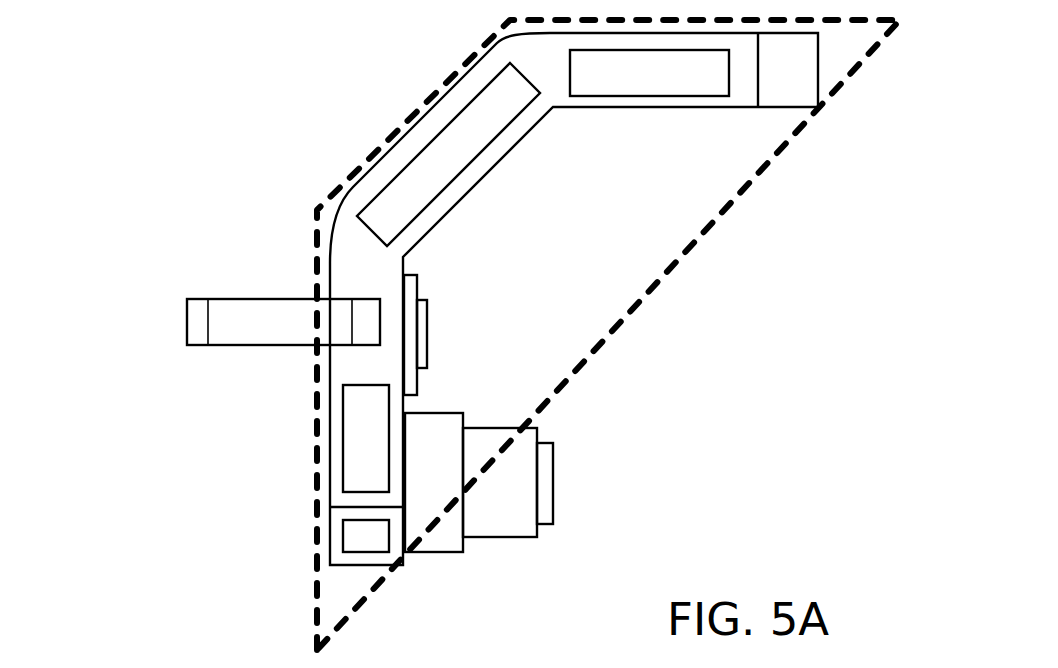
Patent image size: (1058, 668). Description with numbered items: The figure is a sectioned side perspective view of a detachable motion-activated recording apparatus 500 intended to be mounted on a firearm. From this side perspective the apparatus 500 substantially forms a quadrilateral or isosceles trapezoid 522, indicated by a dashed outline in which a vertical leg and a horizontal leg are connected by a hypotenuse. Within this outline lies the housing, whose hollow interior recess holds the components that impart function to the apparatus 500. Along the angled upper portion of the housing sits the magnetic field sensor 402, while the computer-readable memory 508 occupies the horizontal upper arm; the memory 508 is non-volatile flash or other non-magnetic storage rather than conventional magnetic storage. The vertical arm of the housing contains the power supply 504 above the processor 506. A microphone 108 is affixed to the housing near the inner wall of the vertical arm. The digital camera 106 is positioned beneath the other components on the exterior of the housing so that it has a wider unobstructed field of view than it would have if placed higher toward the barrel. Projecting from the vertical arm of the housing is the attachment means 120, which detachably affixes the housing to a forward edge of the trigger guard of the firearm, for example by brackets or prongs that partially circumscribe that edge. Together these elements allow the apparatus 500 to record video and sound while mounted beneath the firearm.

The detachable motion-activated recording apparatus 500 is at (127, 115).
The isosceles trapezoid 522 is at (693, 243).
The magnetic field sensor 402 is at (448, 154).
The computer-readable memory 508 is at (628, 84).
The attachment means 120 is at (247, 334).
The microphone 108 is at (423, 320).
The power supply 504 is at (343, 453).
The processor 506 is at (366, 536).
The digital camera 106 is at (477, 517).